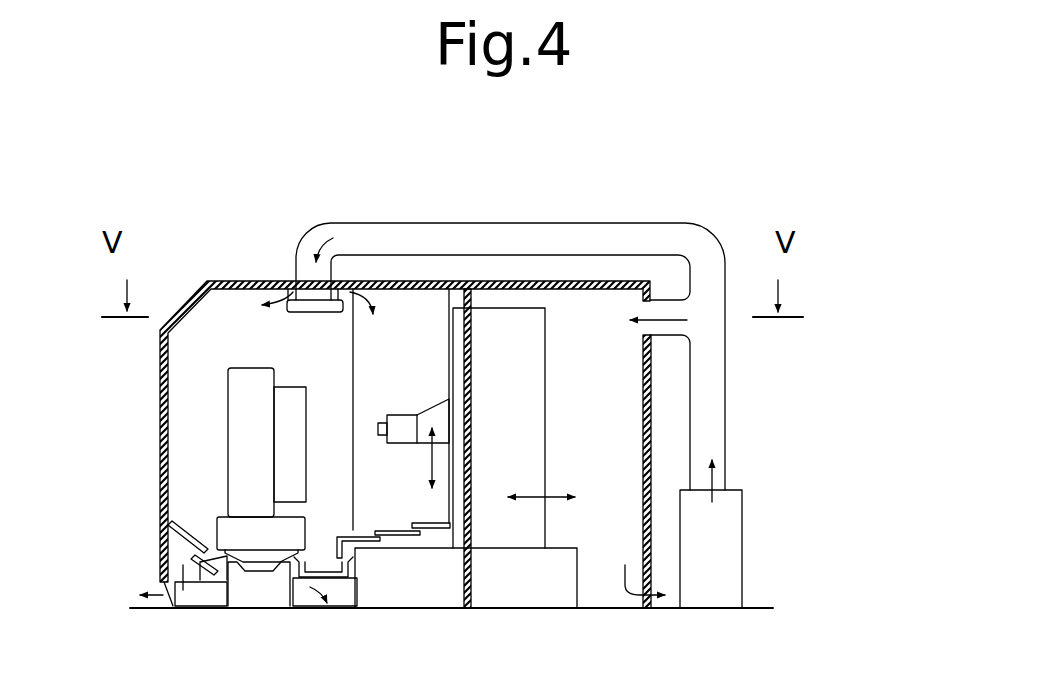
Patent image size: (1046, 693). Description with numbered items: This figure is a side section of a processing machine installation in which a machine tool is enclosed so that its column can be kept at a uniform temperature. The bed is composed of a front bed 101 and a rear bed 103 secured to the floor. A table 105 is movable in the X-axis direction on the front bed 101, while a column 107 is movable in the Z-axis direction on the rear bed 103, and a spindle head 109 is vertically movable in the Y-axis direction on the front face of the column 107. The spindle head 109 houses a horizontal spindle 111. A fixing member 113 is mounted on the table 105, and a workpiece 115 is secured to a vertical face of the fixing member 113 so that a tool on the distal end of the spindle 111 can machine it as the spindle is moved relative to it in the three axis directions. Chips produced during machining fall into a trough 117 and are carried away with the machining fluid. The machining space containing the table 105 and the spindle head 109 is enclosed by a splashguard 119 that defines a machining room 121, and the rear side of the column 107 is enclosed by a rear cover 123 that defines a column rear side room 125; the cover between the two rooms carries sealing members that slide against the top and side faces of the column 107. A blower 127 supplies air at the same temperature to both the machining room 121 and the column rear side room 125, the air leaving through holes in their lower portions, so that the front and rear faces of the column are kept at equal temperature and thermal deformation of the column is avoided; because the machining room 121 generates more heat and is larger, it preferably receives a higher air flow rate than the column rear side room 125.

The front bed 101 is at (260, 590).
The rear bed 103 is at (502, 593).
The table 105 is at (230, 530).
The column 107 is at (530, 352).
The spindle head 109 is at (440, 412).
The spindle 111 is at (375, 428).
The fixing member 113 is at (238, 432).
The workpiece 115 is at (296, 455).
The trough 117 is at (323, 560).
The splashguard 119 is at (185, 298).
The machining room 121 is at (345, 361).
The rear cover 123 is at (555, 284).
The column rear side room 125 is at (617, 379).
The blower 127 is at (723, 537).